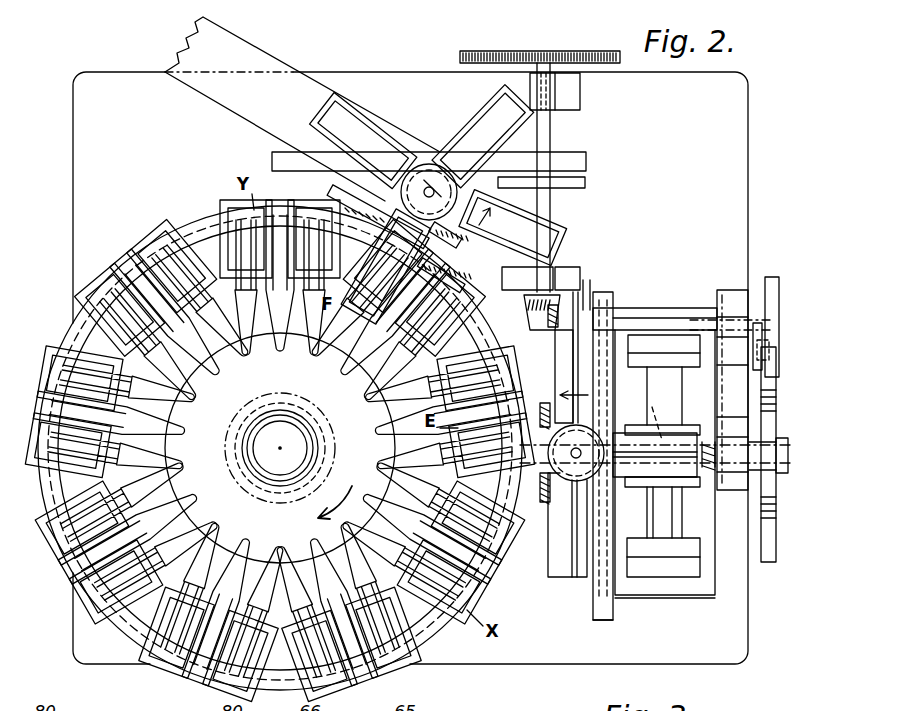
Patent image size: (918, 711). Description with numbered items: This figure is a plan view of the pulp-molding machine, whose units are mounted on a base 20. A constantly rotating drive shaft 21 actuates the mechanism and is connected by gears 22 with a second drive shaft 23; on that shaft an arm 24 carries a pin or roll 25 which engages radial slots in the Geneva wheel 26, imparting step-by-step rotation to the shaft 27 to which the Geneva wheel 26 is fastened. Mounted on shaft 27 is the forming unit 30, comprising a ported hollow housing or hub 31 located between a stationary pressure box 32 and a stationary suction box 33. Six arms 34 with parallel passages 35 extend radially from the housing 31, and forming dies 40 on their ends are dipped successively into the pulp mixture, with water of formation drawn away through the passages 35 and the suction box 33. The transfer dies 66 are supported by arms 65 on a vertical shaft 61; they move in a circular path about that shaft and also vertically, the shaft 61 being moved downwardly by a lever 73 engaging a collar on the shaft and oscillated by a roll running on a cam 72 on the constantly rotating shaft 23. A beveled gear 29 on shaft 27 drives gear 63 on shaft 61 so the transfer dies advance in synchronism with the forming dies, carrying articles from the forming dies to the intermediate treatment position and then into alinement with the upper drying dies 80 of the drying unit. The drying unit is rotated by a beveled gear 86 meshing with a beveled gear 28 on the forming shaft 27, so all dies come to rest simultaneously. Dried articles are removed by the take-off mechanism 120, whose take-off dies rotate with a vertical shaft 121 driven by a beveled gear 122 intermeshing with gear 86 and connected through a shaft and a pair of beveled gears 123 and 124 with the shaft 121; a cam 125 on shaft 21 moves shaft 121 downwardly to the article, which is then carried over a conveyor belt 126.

The base 20 is at (749, 156).
The drive shaft 21 is at (551, 140).
The gears 22 is at (548, 320).
The second drive shaft 23 is at (665, 310).
The arm 24 is at (745, 372).
The pin or roll 25 is at (765, 372).
The Geneva wheel 26 is at (768, 562).
The shaft 27 is at (664, 414).
The beveled gear 28 is at (533, 547).
The beveled gear 29 is at (545, 410).
The forming unit 30 is at (641, 497).
The hollow housing or hub 31 is at (660, 364).
The stationary pressure box 32 is at (686, 425).
The stationary suction box 33 is at (645, 415).
The arms 34 is at (681, 398).
The parallel passages 35 is at (665, 518).
The forming dies 40 is at (680, 578).
The vertical shaft 61 is at (575, 458).
The gear 63 is at (568, 505).
The arms 65 is at (565, 548).
The transfer dies 66 is at (575, 580).
The cam 72 is at (600, 292).
The lever 73 is at (582, 280).
The upper drying dies 80 is at (462, 470).
The beveled gear 86 is at (280, 440).
The take-off mechanism 120 is at (459, 101).
The vertical shaft 121 is at (429, 189).
The beveled gear 122 is at (350, 212).
The beveled gear 123 is at (458, 240).
The beveled gear 124 is at (482, 168).
The cam 125 is at (587, 182).
The conveyor belt 126 is at (262, 52).